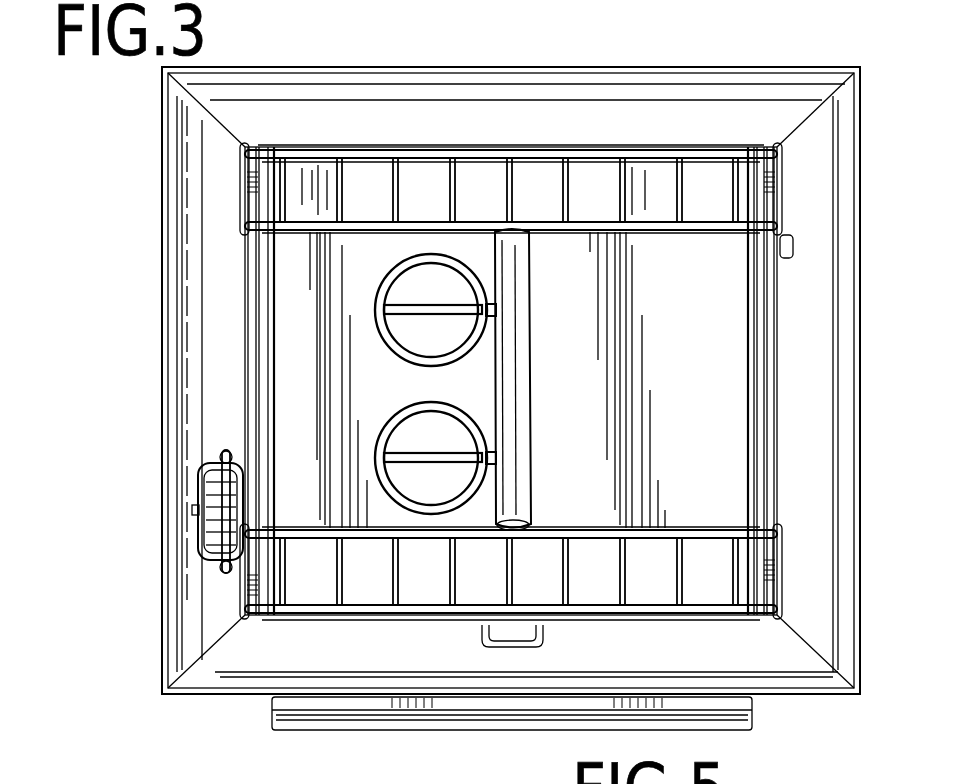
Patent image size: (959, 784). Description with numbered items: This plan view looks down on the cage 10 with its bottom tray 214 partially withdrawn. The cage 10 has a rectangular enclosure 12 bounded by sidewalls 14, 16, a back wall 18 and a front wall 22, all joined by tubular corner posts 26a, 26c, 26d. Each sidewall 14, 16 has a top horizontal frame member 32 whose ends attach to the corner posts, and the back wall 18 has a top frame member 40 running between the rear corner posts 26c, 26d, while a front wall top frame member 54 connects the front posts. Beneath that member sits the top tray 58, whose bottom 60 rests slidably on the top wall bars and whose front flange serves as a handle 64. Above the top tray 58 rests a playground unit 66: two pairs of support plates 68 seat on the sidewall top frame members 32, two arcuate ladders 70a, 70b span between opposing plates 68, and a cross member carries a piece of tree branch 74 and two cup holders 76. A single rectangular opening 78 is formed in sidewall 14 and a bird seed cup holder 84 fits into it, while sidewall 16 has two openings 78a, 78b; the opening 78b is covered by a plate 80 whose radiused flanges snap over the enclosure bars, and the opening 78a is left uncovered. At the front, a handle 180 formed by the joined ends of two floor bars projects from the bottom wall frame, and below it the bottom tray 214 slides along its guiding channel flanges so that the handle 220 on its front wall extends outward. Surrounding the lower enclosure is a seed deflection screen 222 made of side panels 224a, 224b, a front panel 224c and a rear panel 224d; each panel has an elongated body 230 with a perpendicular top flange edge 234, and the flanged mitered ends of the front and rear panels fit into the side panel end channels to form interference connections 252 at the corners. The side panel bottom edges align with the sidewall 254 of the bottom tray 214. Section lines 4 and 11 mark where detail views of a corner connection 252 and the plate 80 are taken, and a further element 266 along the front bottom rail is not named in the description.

The cage 10 is at (142, 518).
The section line 11- 11 is at (712, 238).
The section line 4- 4 is at (193, 152).
The rectangular shaped enclosure 12 is at (247, 304).
The sidewall 14 is at (247, 417).
The sidewall 16 is at (770, 437).
The back wall 18 is at (645, 150).
The front wall 22 is at (318, 613).
The tubular corner post 26a is at (265, 620).
The tubular corner post 26c is at (757, 148).
The tubular corner post 26d is at (247, 178).
The sidewall top horizontal frame member 32 is at (245, 283).
The back wall top frame member 40 is at (588, 160).
The front wall top frame member 54 is at (595, 590).
The top tray 58 is at (537, 282).
The bottom of the top tray 60 is at (544, 454).
The handle 64 is at (670, 620).
The playground unit 66 is at (700, 525).
The support plates 68 is at (243, 205).
The arcuate shaped ladder 70a is at (577, 535).
The arcuate shaped ladder 70b is at (333, 150).
The piece of a tree branch 74 is at (505, 400).
The cup holders 76 is at (432, 366).
The rectangular shaped opening 78 is at (280, 500).
The opening 78a is at (745, 470).
The opening 78b is at (765, 295).
The plate 80 is at (778, 292).
The bird seed cup holder 84 is at (200, 480).
The handle 180 is at (503, 650).
The bottom tray 214 is at (752, 724).
The handle 220 is at (530, 728).
The seed deflection screen 222 is at (277, 88).
The side panel 224a is at (162, 343).
The side panel 224b is at (825, 352).
The front panel 224c is at (807, 680).
The rear panel 224d is at (484, 137).
The elongated body 230 is at (292, 137).
The top flange edge 234 is at (866, 214).
The interference fits or connections 252 is at (212, 115).
The sidewall of the bottom tray 254 is at (275, 722).
The bottom bar 266 is at (757, 622).